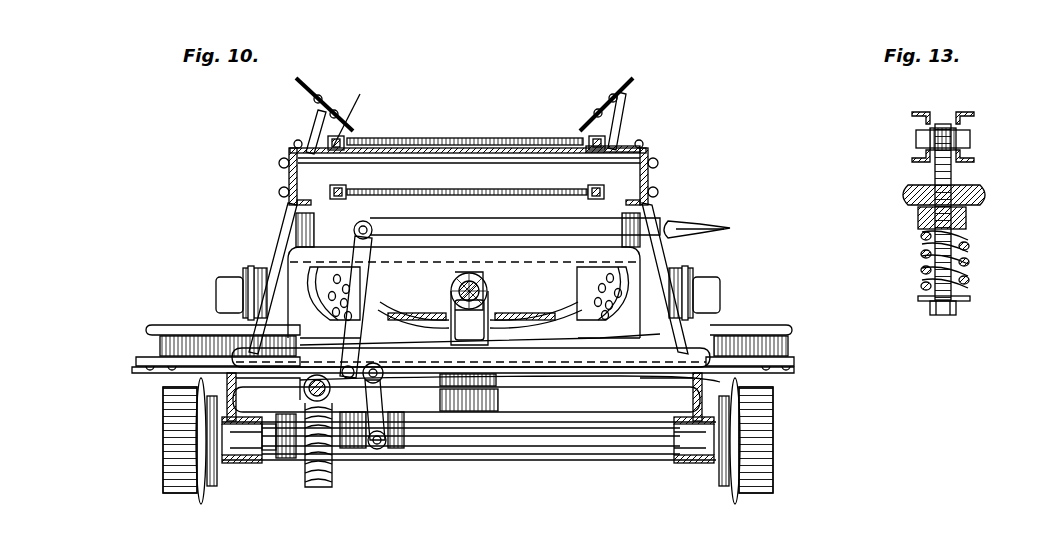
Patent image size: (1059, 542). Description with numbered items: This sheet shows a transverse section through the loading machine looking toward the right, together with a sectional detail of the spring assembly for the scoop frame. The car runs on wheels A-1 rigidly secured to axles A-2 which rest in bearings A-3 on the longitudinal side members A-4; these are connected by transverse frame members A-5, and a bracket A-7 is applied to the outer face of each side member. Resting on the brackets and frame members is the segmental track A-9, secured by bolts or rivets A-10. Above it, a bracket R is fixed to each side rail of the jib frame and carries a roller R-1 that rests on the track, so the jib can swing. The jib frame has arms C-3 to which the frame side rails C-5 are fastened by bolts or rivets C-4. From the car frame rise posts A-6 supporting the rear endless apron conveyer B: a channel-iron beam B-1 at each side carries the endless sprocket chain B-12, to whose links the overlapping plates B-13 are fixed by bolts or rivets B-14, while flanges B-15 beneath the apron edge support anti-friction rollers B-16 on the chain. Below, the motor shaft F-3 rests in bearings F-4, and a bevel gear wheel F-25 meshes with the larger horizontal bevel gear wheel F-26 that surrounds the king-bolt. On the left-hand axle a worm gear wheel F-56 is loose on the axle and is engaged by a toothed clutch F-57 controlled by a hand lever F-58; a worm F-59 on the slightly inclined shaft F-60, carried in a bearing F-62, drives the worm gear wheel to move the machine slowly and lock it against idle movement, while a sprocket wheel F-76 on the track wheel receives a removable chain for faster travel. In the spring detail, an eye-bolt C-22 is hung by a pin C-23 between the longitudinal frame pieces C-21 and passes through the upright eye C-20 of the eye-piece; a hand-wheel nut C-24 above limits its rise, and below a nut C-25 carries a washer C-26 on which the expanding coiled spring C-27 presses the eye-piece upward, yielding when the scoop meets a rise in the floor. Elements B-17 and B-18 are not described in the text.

In FIG. 10, the rear endless apron conveyer B is at (468, 140).
In FIG. 10, the plate or beam B-1 is at (289, 177).
In FIG. 10, the endless sprocket chain B-12 is at (361, 111).
In FIG. 10, the overlapping metal plates B-13 is at (533, 138).
In FIG. 10, the bolts or rivets B-14 is at (580, 139).
In FIG. 10, the flanges B-15 is at (612, 148).
In FIG. 10, the anti-friction rollers B-16 is at (342, 136).
In FIG. 10, the pivot rod B-17 is at (312, 92).
In FIG. 10, the bracket bar B-18 is at (318, 120).
In FIG. 10, the posts A-6 is at (283, 221).
In FIG. 10, the hand lever F-58 is at (430, 238).
In FIG. 10, the frame side rail C-5 is at (660, 270).
In FIG. 10, the bolts or rivets C-4 is at (640, 280).
In FIG. 10, the arms C-3 is at (596, 340).
In FIG. 10, the horizontal bevel gear wheel F-26 is at (520, 320).
In FIG. 10, the bracket R is at (461, 295).
In FIG. 10, the roller R-1 is at (250, 268).
In FIG. 10, the shaft F-3 is at (456, 292).
In FIG. 10, the bevel gear wheel F-25 is at (446, 300).
In FIG. 10, the bearings F-4 is at (484, 290).
In FIG. 10, the worm F-59 is at (316, 356).
In FIG. 10, the inclined shaft F-60 is at (344, 366).
In FIG. 10, the bearing F-62 is at (318, 376).
In FIG. 10, the frame members A-5 is at (692, 343).
In FIG. 10, the segmental track A-9 is at (150, 340).
In FIG. 10, the bolts or rivets A-10 is at (140, 358).
In FIG. 10, the bracket A-7 is at (232, 369).
In FIG. 10, the longitudinal side members A-4 is at (228, 379).
In FIG. 10, the axles A-2 is at (480, 452).
In FIG. 10, the wheels A-1 is at (163, 446).
In FIG. 10, the bearings A-3 is at (236, 440).
In FIG. 10, the sprocket wheel F-76 is at (214, 486).
In FIG. 10, the worm gear wheel F-56 is at (320, 484).
In FIG. 10, the toothed clutch F-57 is at (376, 460).
In FIG. 13, the longitudinal bars or frame pieces C-21 is at (912, 125).
In FIG. 13, the bolt or pin C-23 is at (916, 140).
In FIG. 13, the eye-bolt C-22 is at (935, 174).
In FIG. 13, the hand-wheel nut C-24 is at (982, 188).
In FIG. 13, the upright eye C-20 is at (966, 218).
In FIG. 13, the expanding coiled spring C-27 is at (970, 256).
In FIG. 13, the washer C-26 is at (970, 298).
In FIG. 13, the nut C-25 is at (956, 308).